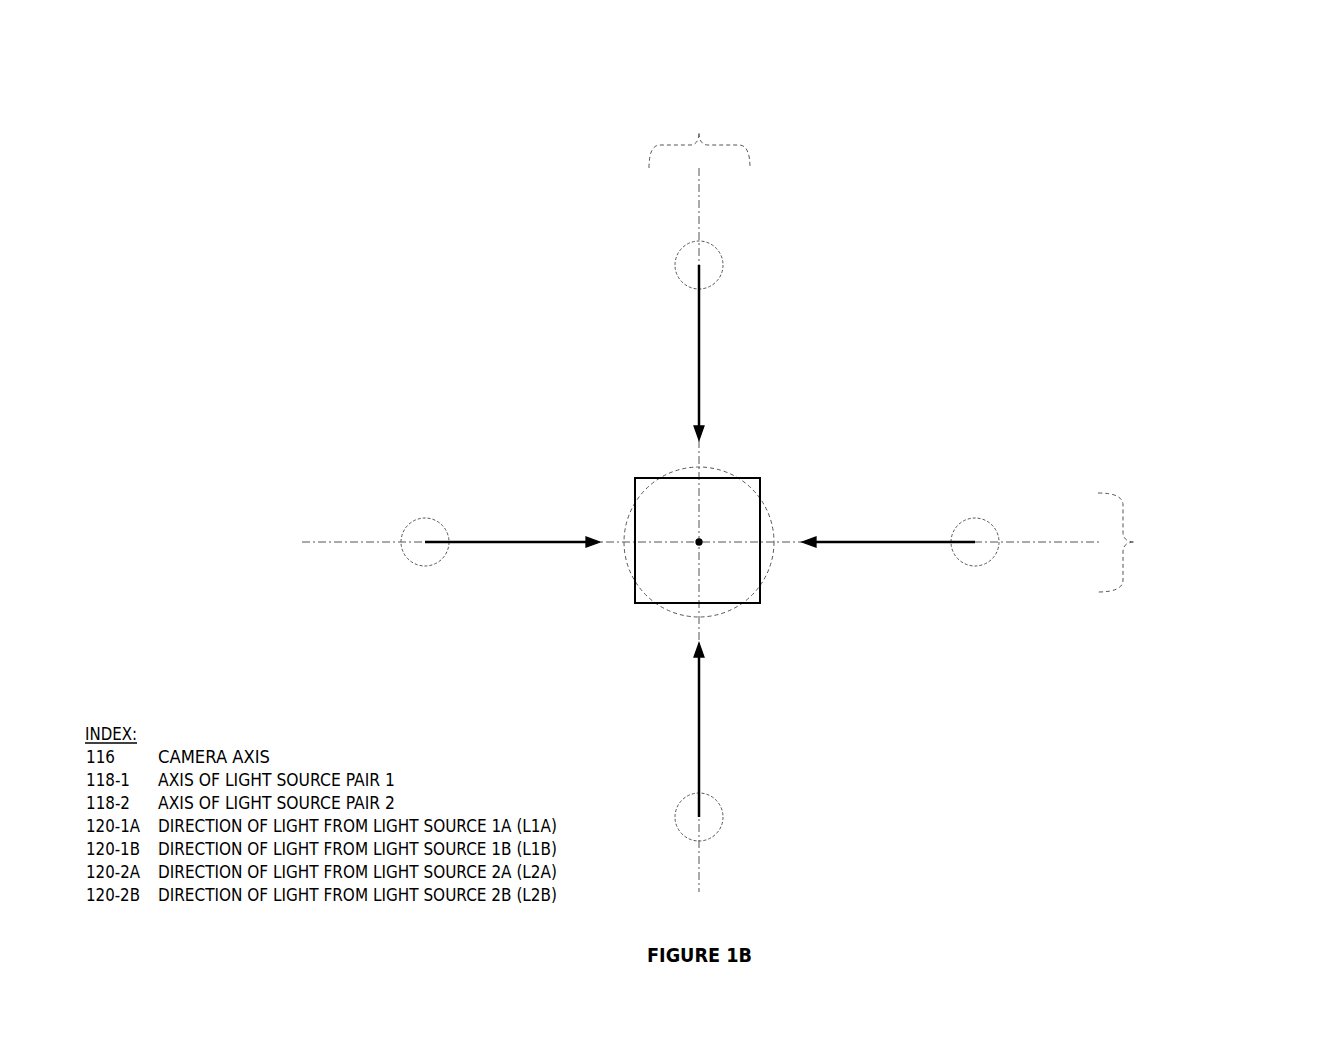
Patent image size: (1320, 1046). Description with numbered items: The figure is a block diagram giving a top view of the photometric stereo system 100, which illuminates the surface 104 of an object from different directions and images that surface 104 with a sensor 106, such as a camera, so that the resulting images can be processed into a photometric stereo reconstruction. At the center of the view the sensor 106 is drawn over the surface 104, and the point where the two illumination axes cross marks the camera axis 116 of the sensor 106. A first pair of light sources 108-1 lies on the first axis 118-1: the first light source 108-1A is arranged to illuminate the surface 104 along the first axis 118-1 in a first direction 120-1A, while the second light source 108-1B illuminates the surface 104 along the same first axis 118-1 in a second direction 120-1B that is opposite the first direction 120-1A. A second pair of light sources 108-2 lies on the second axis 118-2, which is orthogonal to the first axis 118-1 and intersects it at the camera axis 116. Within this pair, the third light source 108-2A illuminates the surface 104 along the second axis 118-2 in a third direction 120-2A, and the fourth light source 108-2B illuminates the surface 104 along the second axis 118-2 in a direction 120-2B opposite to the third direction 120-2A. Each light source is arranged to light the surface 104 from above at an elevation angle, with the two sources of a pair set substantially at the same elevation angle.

The photometric stereo system 100 is at (1175, 88).
The surface 104 is at (747, 577).
The sensor 106 is at (650, 477).
The first pair of light sources 108-1 is at (1257, 563).
The first light source 108-1A is at (452, 513).
The second light source 108-1B is at (1005, 513).
The second pair of light sources 108-2 is at (722, 115).
The third light source 108-2A is at (840, 290).
The fourth light source 108-2B is at (840, 838).
The camera axis 116 is at (699, 542).
The first axis 118-1 is at (1095, 540).
The second axis 118-2 is at (752, 216).
The first direction 120-1A is at (555, 565).
The second direction 120-1B is at (903, 565).
The third direction 120-2A is at (693, 363).
The fourth direction 120-2B is at (765, 740).